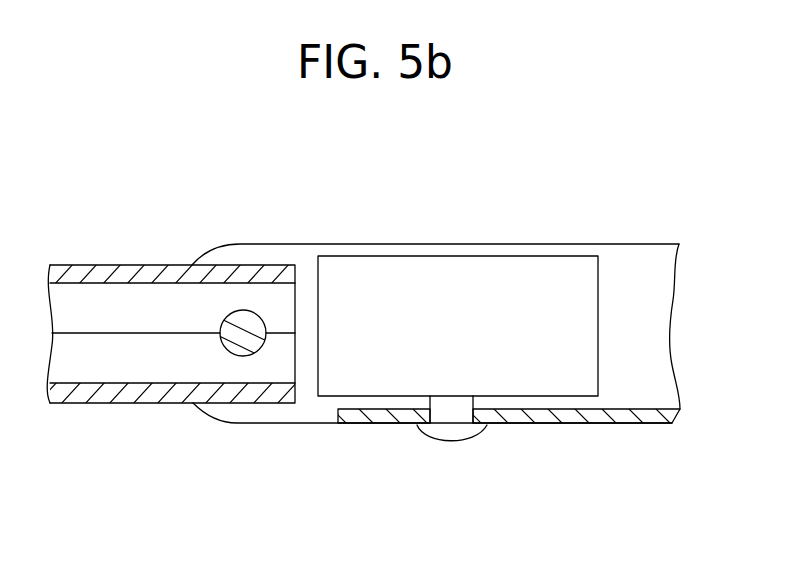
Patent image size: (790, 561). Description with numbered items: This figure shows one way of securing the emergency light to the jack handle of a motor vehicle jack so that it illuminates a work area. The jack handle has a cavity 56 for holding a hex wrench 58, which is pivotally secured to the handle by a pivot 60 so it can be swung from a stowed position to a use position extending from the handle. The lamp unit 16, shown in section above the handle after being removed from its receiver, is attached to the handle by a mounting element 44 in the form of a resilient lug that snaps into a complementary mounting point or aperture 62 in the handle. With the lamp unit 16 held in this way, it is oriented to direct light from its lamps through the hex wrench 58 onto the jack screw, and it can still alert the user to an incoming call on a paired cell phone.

The hex wrench 58 is at (98, 268).
The pivot 60 is at (238, 345).
The lamp unit 16 is at (528, 268).
The aperture 62 is at (432, 416).
The mounting element 44 is at (447, 441).
The cavity 56 is at (637, 383).